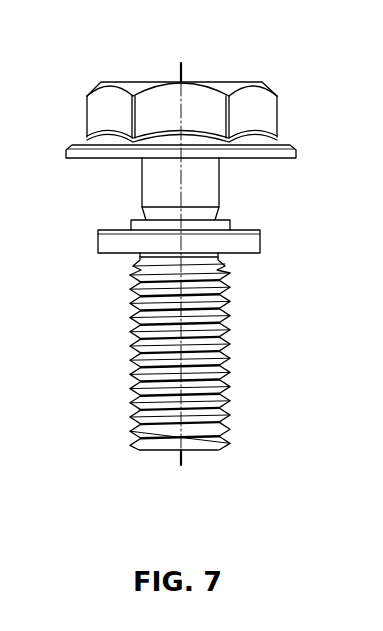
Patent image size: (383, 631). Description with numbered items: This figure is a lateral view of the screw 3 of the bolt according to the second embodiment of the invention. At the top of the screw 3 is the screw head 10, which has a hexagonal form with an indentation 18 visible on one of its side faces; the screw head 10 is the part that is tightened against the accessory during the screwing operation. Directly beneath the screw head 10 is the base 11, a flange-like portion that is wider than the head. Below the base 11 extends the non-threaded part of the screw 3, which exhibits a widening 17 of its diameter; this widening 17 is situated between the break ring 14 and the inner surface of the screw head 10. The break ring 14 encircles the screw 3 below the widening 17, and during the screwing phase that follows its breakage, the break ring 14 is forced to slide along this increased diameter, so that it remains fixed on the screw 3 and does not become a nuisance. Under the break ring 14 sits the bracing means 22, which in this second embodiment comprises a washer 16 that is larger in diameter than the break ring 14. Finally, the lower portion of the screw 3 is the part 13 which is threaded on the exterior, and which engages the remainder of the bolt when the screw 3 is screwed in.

The screw 3 is at (118, 78).
The screw head 10 is at (228, 88).
The indentation 18 is at (265, 99).
The base 11 is at (287, 156).
The widening 17 is at (213, 196).
The break ring 14 is at (230, 222).
The washer 16 is at (252, 242).
The bracing means 22 is at (98, 243).
The part which is threaded on the exterior 13 is at (232, 338).